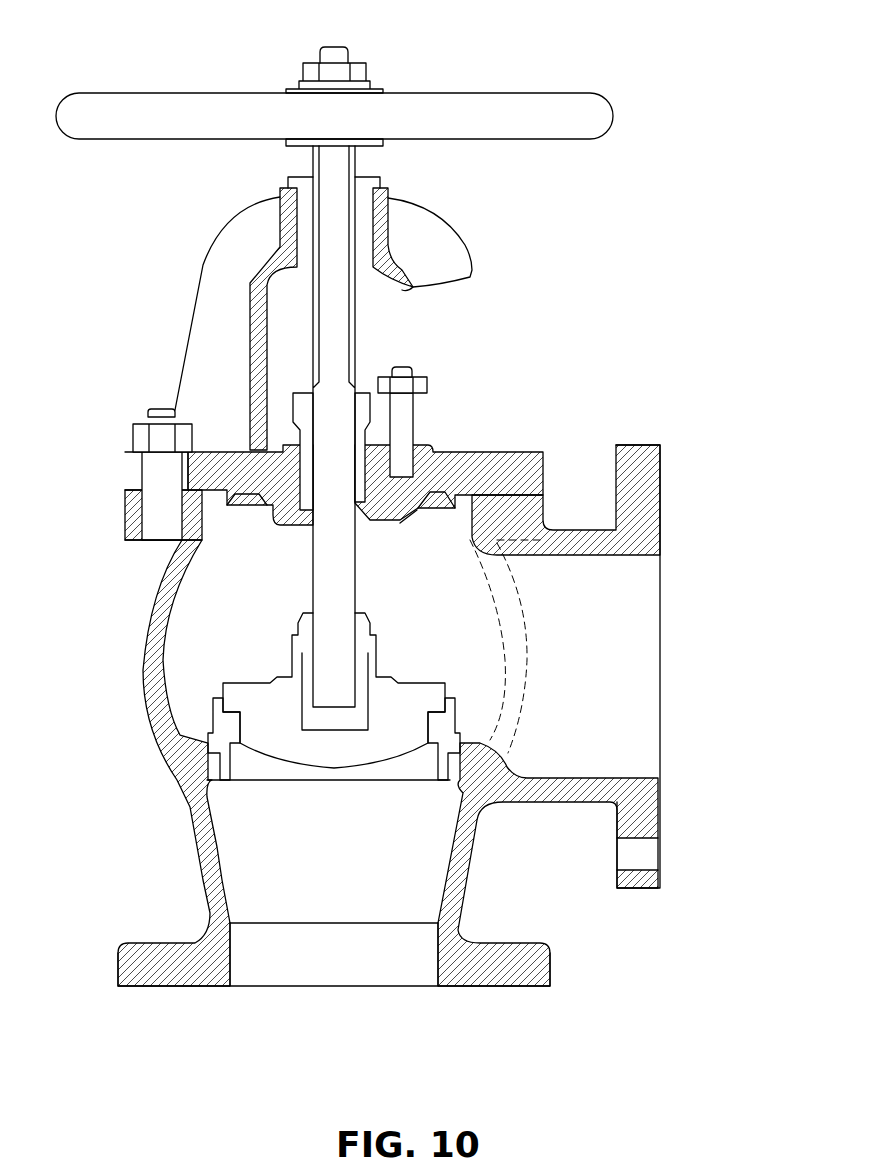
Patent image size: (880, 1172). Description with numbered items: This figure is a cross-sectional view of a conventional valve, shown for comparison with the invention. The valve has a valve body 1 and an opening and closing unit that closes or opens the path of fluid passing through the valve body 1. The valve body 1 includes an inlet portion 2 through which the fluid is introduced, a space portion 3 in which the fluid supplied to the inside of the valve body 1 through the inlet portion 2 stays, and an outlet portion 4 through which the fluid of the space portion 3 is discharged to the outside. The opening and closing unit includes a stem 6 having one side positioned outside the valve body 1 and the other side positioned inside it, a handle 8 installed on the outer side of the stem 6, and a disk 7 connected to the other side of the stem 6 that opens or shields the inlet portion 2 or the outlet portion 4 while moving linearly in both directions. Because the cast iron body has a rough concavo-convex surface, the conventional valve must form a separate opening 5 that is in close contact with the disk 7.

The valve body 1 is at (148, 690).
The inlet portion 2 is at (230, 953).
The space portion 3 is at (462, 633).
The outlet portion 4 is at (610, 778).
The opening 5 is at (245, 775).
The stem 6 is at (342, 318).
The disk 7 is at (380, 742).
The handle 8 is at (540, 103).